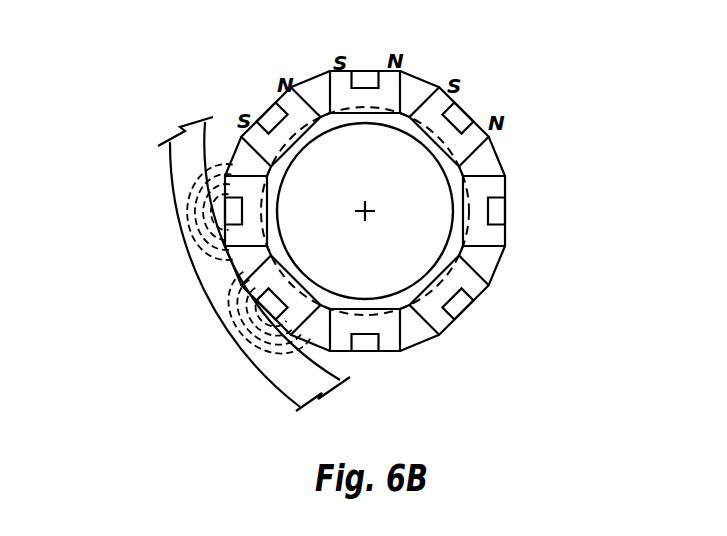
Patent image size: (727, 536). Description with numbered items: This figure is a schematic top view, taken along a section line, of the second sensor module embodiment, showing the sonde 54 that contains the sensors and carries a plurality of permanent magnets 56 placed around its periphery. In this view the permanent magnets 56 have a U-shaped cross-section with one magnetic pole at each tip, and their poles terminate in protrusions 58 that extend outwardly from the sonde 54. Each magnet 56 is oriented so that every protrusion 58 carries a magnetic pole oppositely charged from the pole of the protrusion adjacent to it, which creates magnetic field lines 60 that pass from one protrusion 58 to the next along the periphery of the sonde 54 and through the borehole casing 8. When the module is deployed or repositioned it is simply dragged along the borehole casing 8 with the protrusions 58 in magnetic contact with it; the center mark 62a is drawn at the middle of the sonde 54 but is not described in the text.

The borehole casing 8 is at (172, 175).
The sonde 54 is at (496, 157).
The permanent magnet 56 is at (500, 211).
The protrusion 58 is at (483, 290).
The magnetic field lines 60 is at (250, 348).
The rotor axis 62a is at (369, 215).